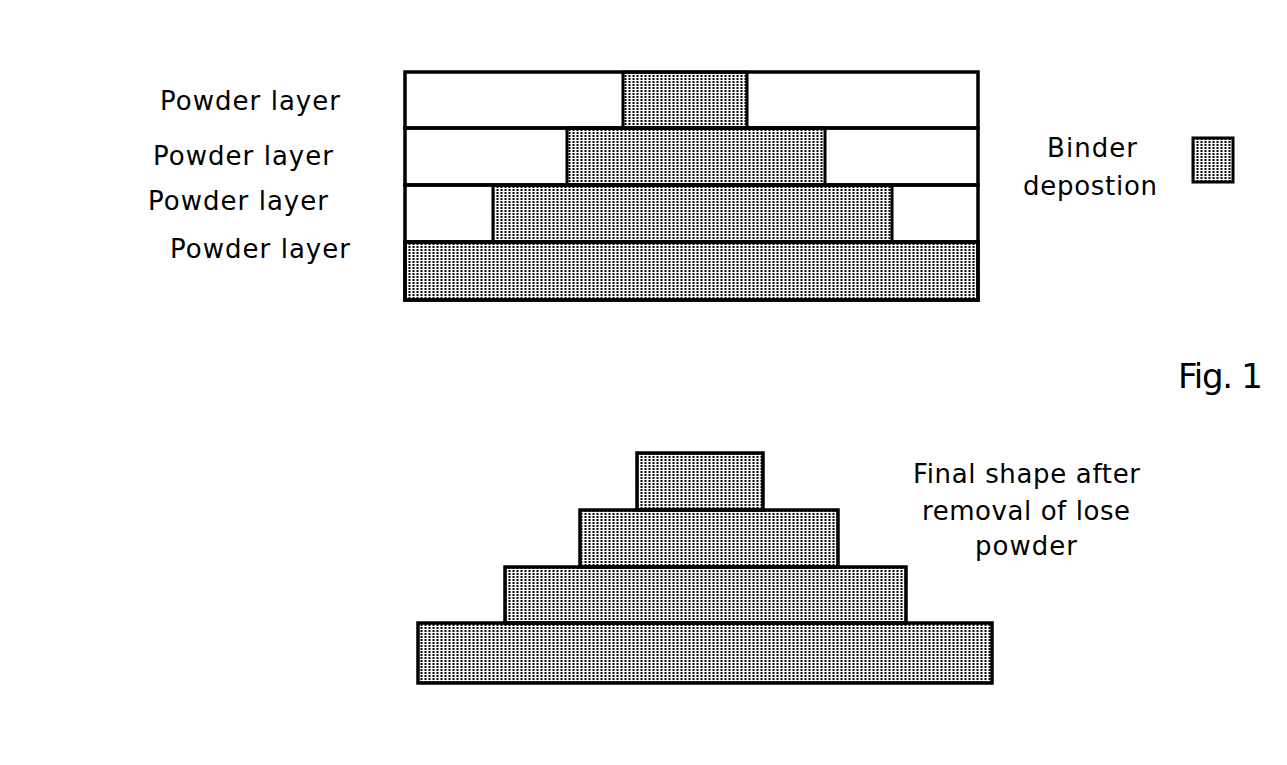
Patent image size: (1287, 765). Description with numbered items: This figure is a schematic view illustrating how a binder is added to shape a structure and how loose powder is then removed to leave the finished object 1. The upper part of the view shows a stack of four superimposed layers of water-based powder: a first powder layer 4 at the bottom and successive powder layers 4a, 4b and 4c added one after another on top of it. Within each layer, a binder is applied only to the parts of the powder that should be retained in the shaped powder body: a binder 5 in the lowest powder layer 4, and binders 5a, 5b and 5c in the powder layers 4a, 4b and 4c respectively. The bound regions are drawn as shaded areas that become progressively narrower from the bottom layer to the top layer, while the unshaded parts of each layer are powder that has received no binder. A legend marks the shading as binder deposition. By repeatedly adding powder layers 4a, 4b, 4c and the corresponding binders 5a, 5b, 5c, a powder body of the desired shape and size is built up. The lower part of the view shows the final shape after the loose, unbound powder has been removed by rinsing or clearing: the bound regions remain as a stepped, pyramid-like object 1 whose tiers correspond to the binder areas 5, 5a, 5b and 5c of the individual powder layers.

The object 1 is at (430, 482).
The powder layer 4 is at (978, 272).
The powder layer 4a is at (978, 213).
The powder layer 4b is at (978, 153).
The powder layer 4c is at (978, 97).
The binder 5 is at (850, 282).
The binder 5a is at (729, 225).
The binder 5b is at (707, 142).
The binder 5c is at (632, 100).